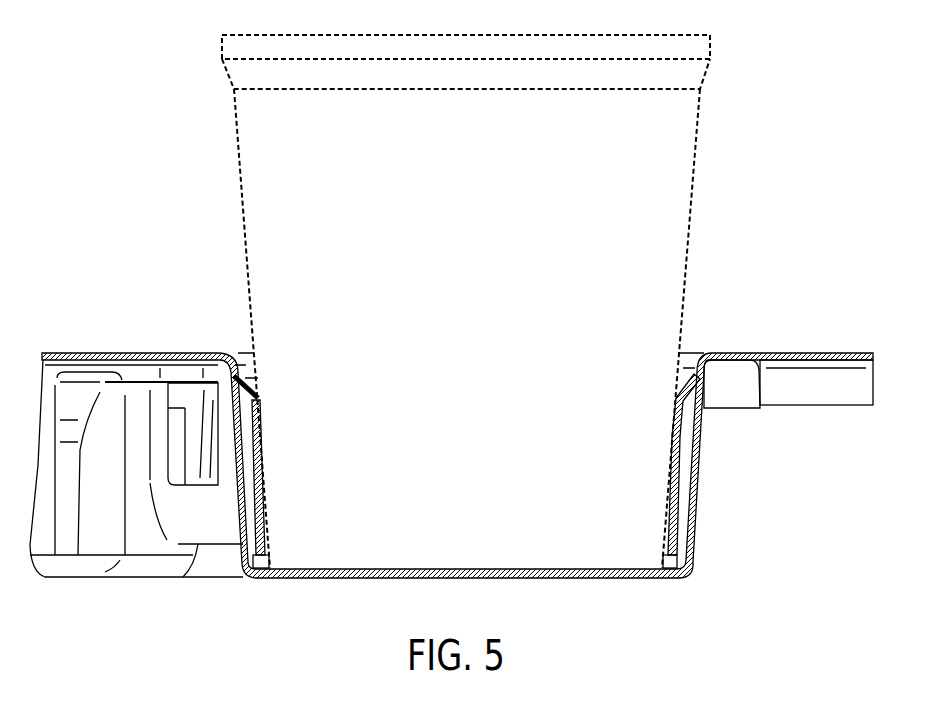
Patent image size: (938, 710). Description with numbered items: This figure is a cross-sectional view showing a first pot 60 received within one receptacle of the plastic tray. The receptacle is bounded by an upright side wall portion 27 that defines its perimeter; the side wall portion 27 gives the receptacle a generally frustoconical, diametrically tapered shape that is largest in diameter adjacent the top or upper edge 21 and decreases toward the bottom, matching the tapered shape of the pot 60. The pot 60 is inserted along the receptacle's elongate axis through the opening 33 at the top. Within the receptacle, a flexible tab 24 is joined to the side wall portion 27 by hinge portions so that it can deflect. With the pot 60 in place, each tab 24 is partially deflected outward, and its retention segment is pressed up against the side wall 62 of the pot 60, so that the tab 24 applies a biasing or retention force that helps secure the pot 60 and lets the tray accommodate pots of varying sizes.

The upper edge 21 is at (778, 353).
The tab 24 is at (277, 479).
The side wall portion 27 is at (699, 487).
The opening 33 is at (696, 352).
The first pot 60 is at (695, 181).
The side wall 62 is at (488, 204).